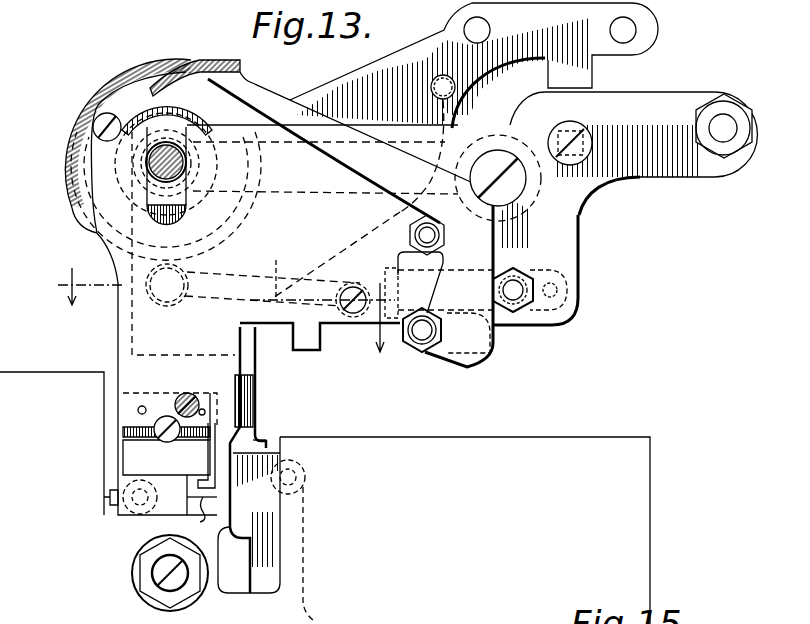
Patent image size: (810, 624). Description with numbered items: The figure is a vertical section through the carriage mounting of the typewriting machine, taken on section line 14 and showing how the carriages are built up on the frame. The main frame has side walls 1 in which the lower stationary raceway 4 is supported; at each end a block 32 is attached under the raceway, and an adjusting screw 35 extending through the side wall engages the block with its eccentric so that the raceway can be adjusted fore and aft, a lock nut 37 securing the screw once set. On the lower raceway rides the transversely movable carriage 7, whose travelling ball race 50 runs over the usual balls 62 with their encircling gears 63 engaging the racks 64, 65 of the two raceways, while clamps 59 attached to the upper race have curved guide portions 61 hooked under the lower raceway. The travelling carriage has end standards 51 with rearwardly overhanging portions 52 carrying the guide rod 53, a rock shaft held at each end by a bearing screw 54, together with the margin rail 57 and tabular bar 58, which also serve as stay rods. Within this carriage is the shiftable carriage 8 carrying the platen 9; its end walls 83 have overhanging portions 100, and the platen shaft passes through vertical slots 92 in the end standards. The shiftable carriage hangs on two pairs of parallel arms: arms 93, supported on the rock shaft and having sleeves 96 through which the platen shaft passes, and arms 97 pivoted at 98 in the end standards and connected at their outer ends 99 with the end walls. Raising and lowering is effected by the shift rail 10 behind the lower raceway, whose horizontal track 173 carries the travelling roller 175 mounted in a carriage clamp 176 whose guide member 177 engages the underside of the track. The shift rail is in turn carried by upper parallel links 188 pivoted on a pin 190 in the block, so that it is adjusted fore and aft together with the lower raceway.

The side walls 1 is at (413, 440).
The lower stationary raceway 4 is at (130, 462).
The transversely movable carriage 7 is at (466, 114).
The shiftable carriage 8 is at (315, 84).
The platen 9 is at (118, 72).
The shift rail 10 is at (233, 503).
The section line 14 is at (215, 324).
The block 32 is at (128, 484).
The adjusting screw 35 is at (160, 574).
The lock nut 37 is at (138, 596).
The travelling ball race 50 is at (128, 390).
The end standards 51 is at (485, 130).
The overhanging portions 52 is at (672, 98).
The guide rod 53 is at (557, 210).
The bearing screw 54 is at (515, 186).
The margin rail 57 is at (588, 133).
The tabular bar 58 is at (722, 133).
The clamps 59 is at (209, 470).
The guide portions 61 is at (202, 518).
The balls 62 is at (160, 413).
The encircling gears 63 is at (146, 436).
The rack 64 is at (124, 431).
The rack 65 is at (203, 409).
The end walls 83 is at (366, 78).
The vertical slots 92 is at (126, 126).
The parallel arms 93 is at (328, 180).
The sleeves 96 is at (180, 200).
The parallel arms 97 is at (285, 269).
The pivot 98 is at (355, 316).
The outer ends 99 is at (161, 304).
The overhanging portions 100 is at (652, 22).
The horizontal track 173 is at (262, 438).
The travelling roller 175 is at (253, 417).
The carriage clamp 176 is at (262, 372).
The guide member 177 is at (262, 450).
The upper parallel links 188 is at (263, 495).
The pin 190 is at (143, 510).